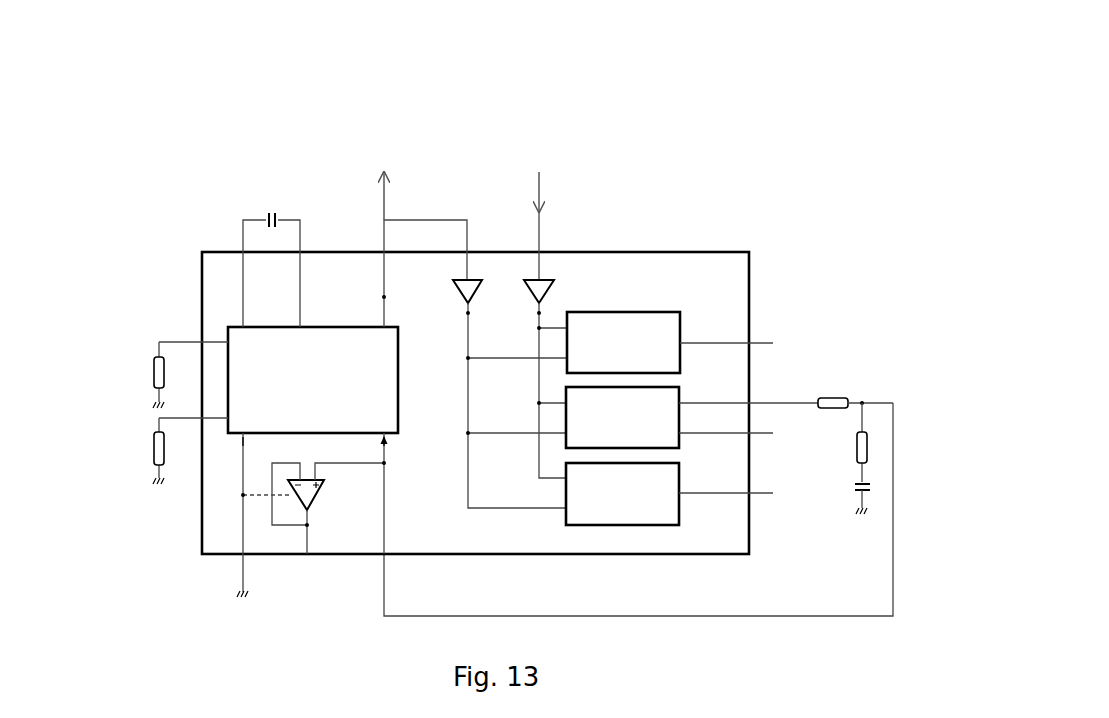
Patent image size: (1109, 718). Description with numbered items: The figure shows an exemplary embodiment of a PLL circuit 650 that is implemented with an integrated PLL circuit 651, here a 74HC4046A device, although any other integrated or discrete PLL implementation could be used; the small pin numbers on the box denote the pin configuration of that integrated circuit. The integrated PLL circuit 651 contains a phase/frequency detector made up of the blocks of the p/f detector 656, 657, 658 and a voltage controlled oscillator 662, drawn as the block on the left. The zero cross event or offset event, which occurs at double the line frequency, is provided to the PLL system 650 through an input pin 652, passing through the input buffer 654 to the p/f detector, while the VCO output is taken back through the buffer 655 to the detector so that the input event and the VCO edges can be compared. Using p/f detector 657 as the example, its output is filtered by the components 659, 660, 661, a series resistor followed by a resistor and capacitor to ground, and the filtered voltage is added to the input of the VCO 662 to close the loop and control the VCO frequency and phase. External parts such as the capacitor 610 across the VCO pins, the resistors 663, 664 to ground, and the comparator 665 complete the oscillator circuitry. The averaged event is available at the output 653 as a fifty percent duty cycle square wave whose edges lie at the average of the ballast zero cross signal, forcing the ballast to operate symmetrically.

The PLL circuit 650 is at (728, 130).
The integrated PLL circuit 651 is at (641, 243).
The input pin 652 is at (550, 211).
The output 653 is at (421, 238).
The input buffer 654 is at (546, 278).
The buffer 655 is at (455, 278).
The p/f detector 656 is at (667, 310).
The p/f detector 657 is at (681, 386).
The p/f detector 658 is at (681, 461).
The filter component 659 is at (831, 396).
The filter component 660 is at (852, 445).
The filter component 661 is at (852, 494).
The voltage controlled oscillator 662 is at (226, 323).
The resistor 663 is at (150, 357).
The resistor 664 is at (148, 430).
The comparator 665 is at (316, 500).
The capacitor 610 is at (272, 207).